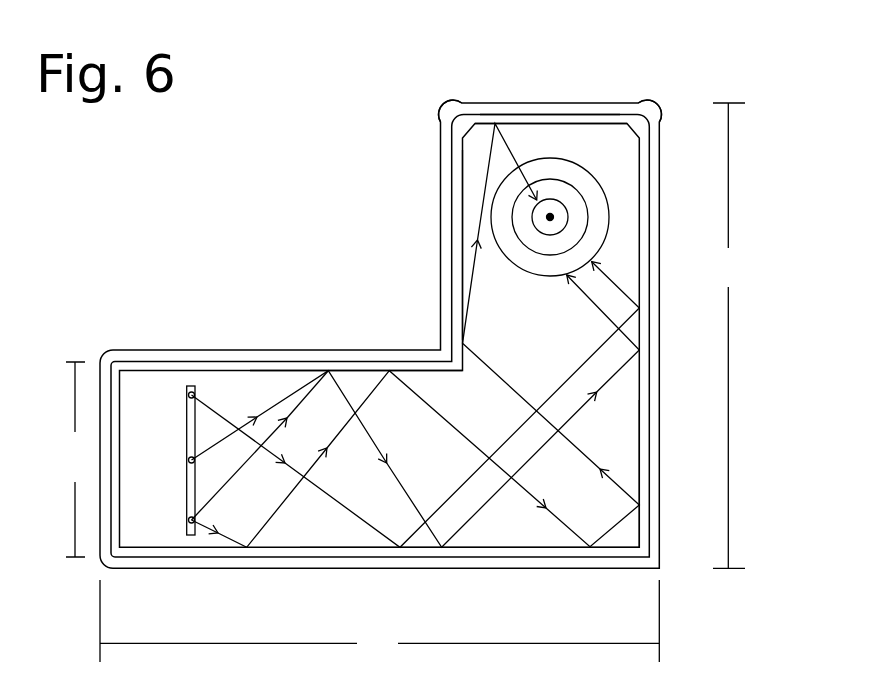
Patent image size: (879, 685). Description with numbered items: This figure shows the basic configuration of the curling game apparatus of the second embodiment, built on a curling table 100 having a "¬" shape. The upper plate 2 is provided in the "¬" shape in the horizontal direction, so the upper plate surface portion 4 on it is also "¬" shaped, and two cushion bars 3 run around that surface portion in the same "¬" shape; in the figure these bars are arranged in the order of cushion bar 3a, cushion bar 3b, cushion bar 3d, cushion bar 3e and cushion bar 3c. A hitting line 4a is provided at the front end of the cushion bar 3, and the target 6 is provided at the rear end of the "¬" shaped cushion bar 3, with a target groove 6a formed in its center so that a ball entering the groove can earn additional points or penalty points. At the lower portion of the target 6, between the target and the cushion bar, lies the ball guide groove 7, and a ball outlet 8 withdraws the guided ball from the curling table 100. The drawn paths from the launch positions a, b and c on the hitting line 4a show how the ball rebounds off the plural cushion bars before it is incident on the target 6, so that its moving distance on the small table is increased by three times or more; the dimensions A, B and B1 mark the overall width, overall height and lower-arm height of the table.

The curling table 100 is at (673, 302).
The upper plate 2 is at (661, 407).
The cushion bar 3 is at (533, 552).
The cushion bar 3a is at (425, 550).
The cushion bar 3b is at (643, 487).
The cushion bar 3c is at (340, 367).
The cushion bar 3d is at (605, 123).
The cushion bar 3e is at (455, 210).
The upper plate surface portion 4 is at (335, 525).
The hitting line 4a is at (190, 540).
The target 6 is at (598, 212).
The target groove 6a is at (562, 208).
The ball guide groove 7 is at (546, 132).
The ball outlet 8 is at (440, 124).
The emission point a is at (180, 392).
The emission point b is at (180, 460).
The emission point c is at (181, 528).
The width dimension A is at (379, 621).
The height dimension B is at (729, 335).
The lower arm height dimension B1 is at (71, 459).